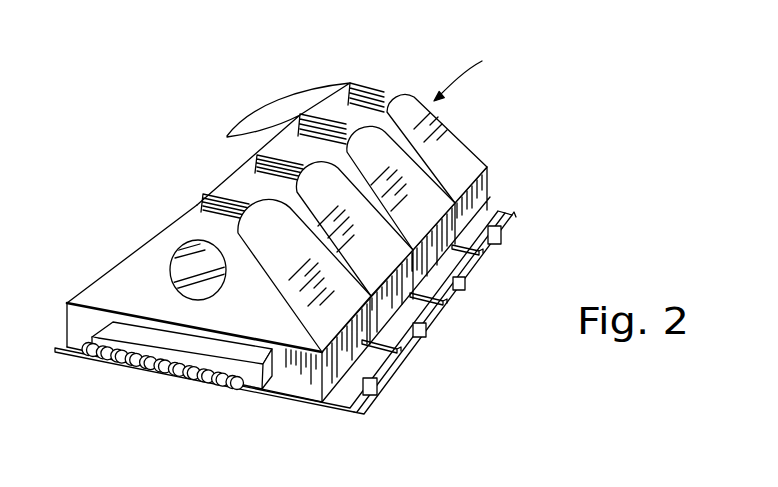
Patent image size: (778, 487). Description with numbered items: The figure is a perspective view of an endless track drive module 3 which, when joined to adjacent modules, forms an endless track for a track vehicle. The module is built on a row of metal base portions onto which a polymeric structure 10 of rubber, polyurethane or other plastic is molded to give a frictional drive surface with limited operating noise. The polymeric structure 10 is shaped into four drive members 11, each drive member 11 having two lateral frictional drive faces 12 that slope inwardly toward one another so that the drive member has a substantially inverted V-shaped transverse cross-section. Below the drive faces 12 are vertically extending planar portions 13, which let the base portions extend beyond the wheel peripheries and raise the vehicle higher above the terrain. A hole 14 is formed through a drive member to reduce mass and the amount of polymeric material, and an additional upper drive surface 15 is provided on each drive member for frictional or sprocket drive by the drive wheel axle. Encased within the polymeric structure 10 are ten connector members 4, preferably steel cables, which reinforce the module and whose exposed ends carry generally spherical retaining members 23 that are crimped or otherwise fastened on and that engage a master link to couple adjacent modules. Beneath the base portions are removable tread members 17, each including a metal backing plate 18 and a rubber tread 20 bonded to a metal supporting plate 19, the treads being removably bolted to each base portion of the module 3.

The endless track drive module 3 is at (466, 73).
The connector member 4 is at (253, 388).
The polymeric structure 10 is at (95, 282).
The drive member 11 is at (257, 156).
The drive face 12 is at (264, 258).
The vertically extending planar portion 13 is at (322, 388).
The hole 14 is at (170, 271).
The upper drive surface 15 is at (372, 86).
The tread member 17 is at (378, 385).
The metal backing plate 18 is at (433, 303).
The metal supporting plate 19 is at (386, 368).
The rubber tread 20 is at (367, 396).
The retaining member 23 is at (239, 389).